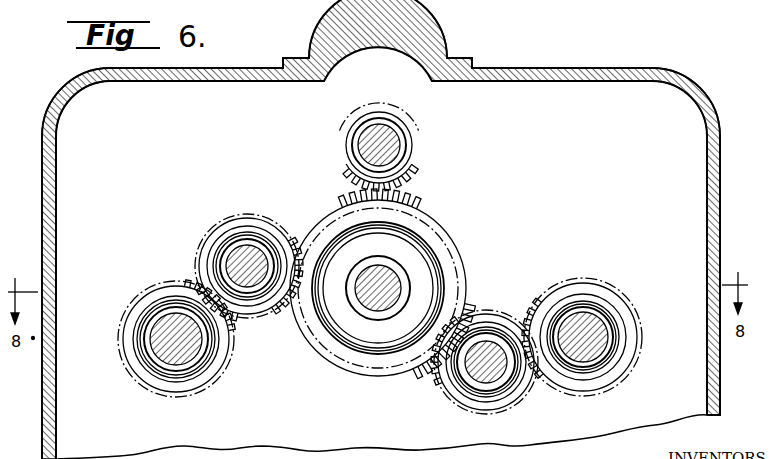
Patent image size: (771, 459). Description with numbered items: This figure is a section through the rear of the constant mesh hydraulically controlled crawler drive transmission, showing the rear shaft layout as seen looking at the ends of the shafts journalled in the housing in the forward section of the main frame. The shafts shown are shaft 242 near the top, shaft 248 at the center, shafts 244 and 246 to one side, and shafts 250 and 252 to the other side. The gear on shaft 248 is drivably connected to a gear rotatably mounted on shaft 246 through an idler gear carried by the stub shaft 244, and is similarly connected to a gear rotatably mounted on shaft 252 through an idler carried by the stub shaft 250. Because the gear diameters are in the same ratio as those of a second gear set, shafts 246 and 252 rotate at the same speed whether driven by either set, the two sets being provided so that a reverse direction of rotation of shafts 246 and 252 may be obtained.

The shaft 242 is at (372, 146).
The stub shaft 244 is at (244, 246).
The shaft 246 is at (164, 320).
The shaft 248 is at (392, 277).
The stub shaft 250 is at (494, 369).
The shaft 252 is at (583, 312).